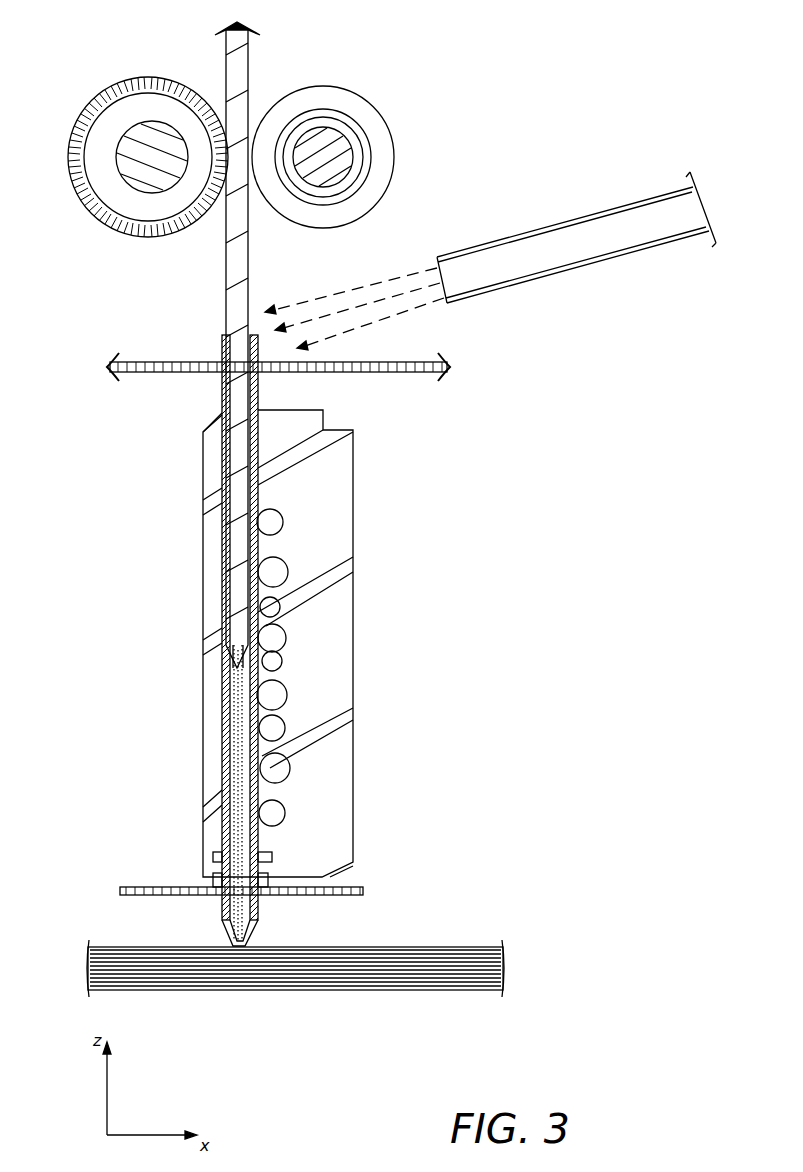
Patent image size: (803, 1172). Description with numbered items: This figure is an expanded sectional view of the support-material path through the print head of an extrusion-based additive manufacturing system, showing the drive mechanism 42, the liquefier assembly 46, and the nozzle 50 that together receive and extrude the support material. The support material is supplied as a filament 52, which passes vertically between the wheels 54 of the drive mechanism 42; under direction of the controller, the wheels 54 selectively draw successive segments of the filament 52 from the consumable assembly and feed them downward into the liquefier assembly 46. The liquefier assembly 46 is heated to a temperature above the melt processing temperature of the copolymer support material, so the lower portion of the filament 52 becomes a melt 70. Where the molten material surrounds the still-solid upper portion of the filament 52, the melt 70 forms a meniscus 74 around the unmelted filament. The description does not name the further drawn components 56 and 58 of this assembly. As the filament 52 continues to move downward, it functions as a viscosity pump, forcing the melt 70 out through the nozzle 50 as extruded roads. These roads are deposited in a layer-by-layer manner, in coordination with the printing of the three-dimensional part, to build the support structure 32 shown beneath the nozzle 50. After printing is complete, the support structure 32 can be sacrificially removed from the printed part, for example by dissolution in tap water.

The support structure 32 is at (105, 945).
The drive mechanism 42 is at (418, 127).
The liquefier assembly 46 is at (449, 583).
The nozzle 50 is at (255, 936).
The filament 52 is at (247, 78).
The wheels 54 is at (69, 162).
The guide channel 56 is at (225, 562).
The heater block 58 is at (347, 665).
The melt 70 is at (237, 745).
The meniscus 74 is at (222, 662).